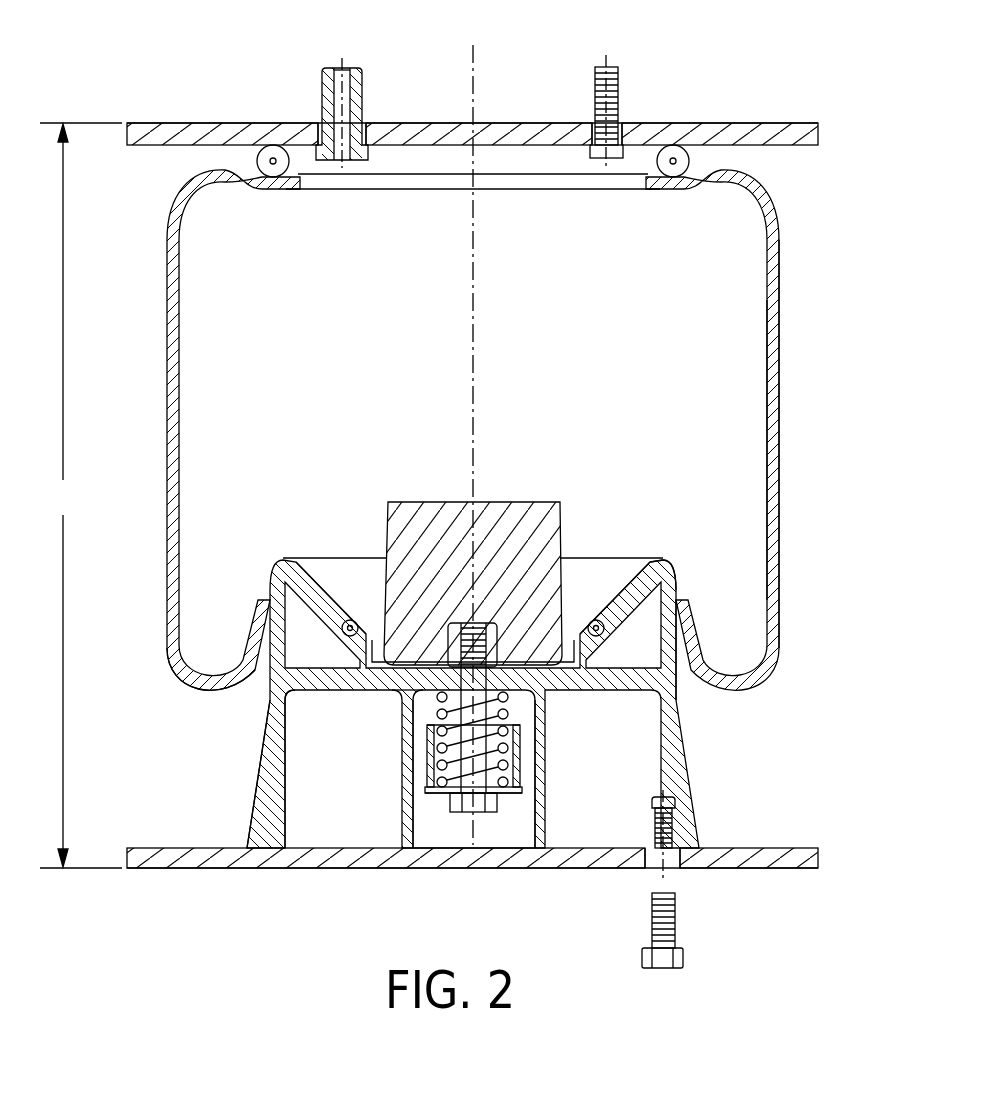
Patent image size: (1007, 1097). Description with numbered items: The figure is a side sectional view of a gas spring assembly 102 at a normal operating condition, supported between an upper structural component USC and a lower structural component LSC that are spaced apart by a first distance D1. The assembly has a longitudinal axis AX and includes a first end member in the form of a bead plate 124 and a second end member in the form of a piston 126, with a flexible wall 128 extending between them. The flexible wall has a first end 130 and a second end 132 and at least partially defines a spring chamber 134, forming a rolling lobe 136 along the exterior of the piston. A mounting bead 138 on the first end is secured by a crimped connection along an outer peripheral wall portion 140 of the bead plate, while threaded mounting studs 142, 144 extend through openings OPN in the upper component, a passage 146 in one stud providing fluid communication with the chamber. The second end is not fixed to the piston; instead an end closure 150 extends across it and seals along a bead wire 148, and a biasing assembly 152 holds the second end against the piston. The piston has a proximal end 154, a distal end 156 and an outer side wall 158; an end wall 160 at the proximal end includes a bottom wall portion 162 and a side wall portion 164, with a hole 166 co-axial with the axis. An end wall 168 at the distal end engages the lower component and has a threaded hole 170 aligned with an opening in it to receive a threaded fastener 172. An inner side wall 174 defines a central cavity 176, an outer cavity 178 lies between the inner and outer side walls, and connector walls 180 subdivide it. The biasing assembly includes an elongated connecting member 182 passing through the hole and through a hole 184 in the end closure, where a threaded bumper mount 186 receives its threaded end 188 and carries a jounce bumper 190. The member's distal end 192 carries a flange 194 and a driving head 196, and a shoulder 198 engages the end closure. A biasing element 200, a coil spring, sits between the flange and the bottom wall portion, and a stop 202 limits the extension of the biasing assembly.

The gas spring assembly 102 is at (797, 262).
The bead plate 124 is at (497, 140).
The piston 126 is at (702, 770).
The flexible wall 128 is at (784, 355).
The first end 130 is at (284, 203).
The second end 132 is at (282, 528).
The spring chamber 134 is at (742, 412).
The rolling lobe 136 is at (205, 683).
The mounting bead 138 is at (272, 156).
The outer peripheral wall portion 140 is at (688, 158).
The threaded mounting stud 142 is at (364, 88).
The threaded mounting stud 144 is at (619, 98).
The passage 146 is at (328, 64).
The bead wire 148 is at (600, 640).
The end closure 150 is at (594, 620).
The biasing assembly 152 is at (433, 803).
The proximal end 154 is at (667, 588).
The distal end 156 is at (241, 826).
The outer side wall 158 is at (268, 736).
The end wall 160 is at (350, 682).
The bottom wall portion 162 is at (410, 700).
The side wall portion 164 is at (348, 636).
The hole 166 is at (530, 680).
The end wall 168 is at (272, 838).
The threaded hole 170 is at (674, 815).
The threaded fastener 172 is at (677, 917).
The inner side wall 174 is at (540, 770).
The central cavity 176 is at (495, 838).
The outer cavity 178 is at (624, 746).
The connector walls 180 is at (312, 826).
The elongated connecting member 182 is at (480, 765).
The hole 184 is at (452, 667).
The threaded bumper mount 186 is at (462, 630).
The threaded end 188 is at (495, 628).
The jounce bumper 190 is at (465, 510).
The distal end 192 is at (522, 824).
The flange 194 is at (522, 790).
The driving head 196 is at (470, 814).
The shoulder 198 is at (490, 660).
The biasing element 200 is at (430, 750).
The stop 202 is at (430, 790).
The axis AX is at (480, 292).
The first distance D1 is at (81, 495).
The upper structural component USC is at (775, 125).
The lower structural component LSC is at (185, 870).
The opening OPN is at (404, 135).